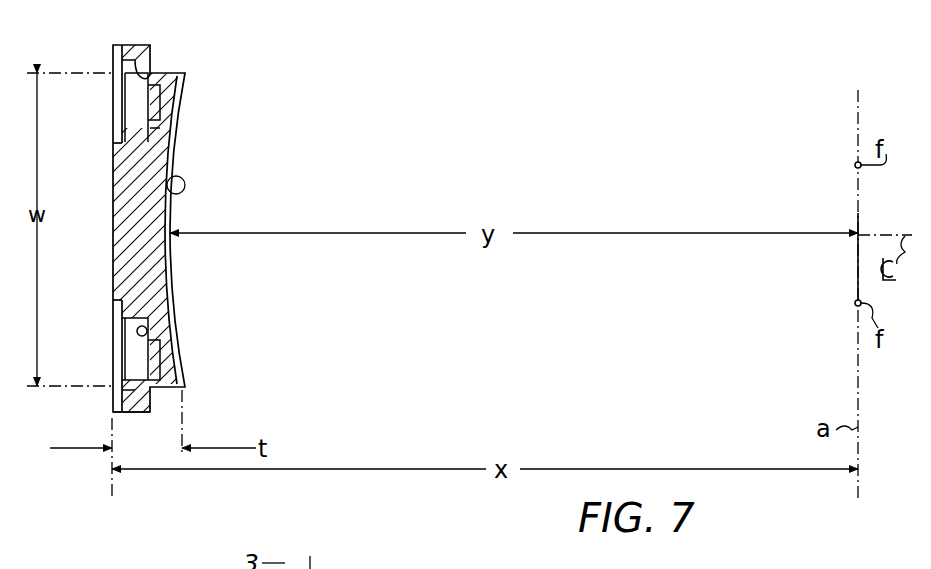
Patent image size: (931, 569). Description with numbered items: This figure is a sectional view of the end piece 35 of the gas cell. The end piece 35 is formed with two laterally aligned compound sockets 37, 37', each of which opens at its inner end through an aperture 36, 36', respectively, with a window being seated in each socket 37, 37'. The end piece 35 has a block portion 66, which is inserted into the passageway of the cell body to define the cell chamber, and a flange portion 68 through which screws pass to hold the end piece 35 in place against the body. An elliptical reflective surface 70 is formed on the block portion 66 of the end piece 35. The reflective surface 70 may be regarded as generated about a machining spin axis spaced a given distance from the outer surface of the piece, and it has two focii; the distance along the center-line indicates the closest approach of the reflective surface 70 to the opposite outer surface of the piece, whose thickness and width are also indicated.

The end piece 35 is at (106, 259).
The aperture 36 is at (188, 354).
The aperture 36' is at (195, 107).
The compound socket 37 is at (193, 334).
The compound socket 37' is at (189, 54).
The block portion 66 is at (168, 128).
The flange portion 68 is at (136, 416).
The elliptical reflective surface 70 is at (167, 180).